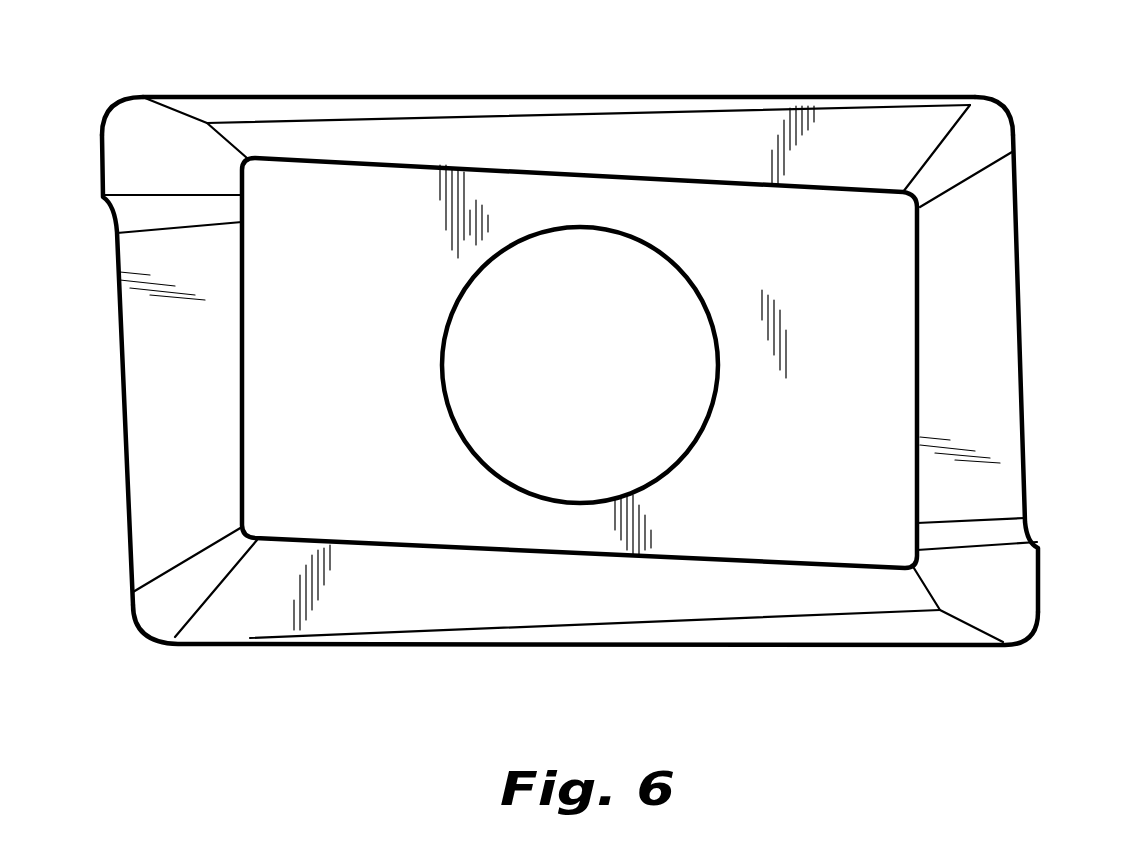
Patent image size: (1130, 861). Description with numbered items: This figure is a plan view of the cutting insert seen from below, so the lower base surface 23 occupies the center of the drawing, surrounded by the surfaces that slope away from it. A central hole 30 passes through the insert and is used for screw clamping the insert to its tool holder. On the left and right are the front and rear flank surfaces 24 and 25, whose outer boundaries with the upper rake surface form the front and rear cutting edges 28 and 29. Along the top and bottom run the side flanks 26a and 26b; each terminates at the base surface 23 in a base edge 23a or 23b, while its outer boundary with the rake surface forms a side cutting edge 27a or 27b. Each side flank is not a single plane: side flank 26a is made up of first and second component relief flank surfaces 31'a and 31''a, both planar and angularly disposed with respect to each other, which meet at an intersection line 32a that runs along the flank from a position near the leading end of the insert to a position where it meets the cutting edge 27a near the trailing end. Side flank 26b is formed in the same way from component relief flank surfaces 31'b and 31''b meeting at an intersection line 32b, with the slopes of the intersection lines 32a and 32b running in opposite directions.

The lower base surface 23 is at (361, 388).
The base edge 23a is at (295, 533).
The base edge 23b is at (392, 170).
The front flank surface 24 is at (188, 388).
The rear flank surface 25 is at (978, 388).
The side flank 26a is at (402, 655).
The side flank 26b is at (575, 93).
The side cutting edge 27a is at (640, 648).
The side cutting edge 27b is at (728, 96).
The front cutting edge 28 is at (115, 365).
The rear cutting edge 29 is at (1025, 362).
The central hole 30 is at (591, 384).
The first component relief flank surface 31'a is at (846, 676).
The second component relief flank surface 31''a is at (822, 558).
The component relief flank surface 31'b is at (478, 75).
The component relief flank surface 31''b is at (273, 89).
The intersection line 32a is at (698, 620).
The intersection line 32b is at (390, 120).